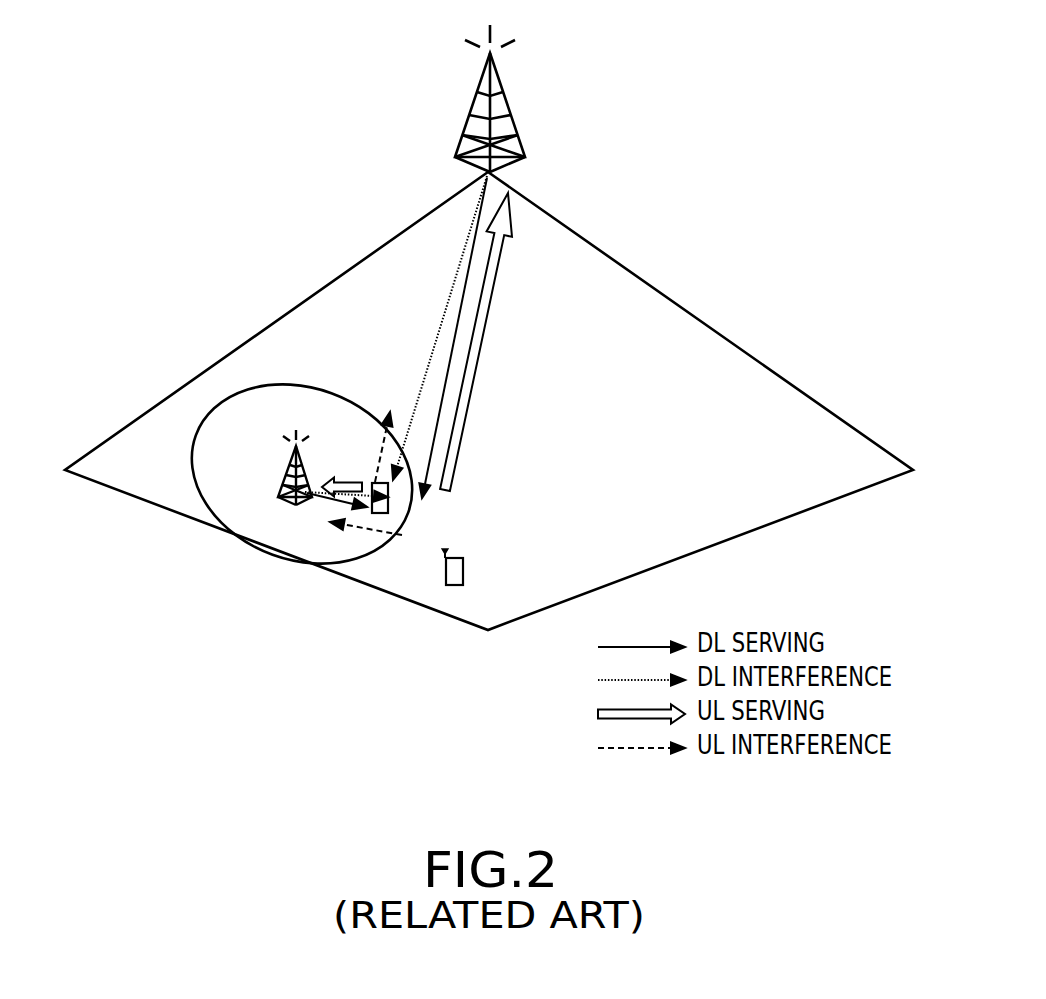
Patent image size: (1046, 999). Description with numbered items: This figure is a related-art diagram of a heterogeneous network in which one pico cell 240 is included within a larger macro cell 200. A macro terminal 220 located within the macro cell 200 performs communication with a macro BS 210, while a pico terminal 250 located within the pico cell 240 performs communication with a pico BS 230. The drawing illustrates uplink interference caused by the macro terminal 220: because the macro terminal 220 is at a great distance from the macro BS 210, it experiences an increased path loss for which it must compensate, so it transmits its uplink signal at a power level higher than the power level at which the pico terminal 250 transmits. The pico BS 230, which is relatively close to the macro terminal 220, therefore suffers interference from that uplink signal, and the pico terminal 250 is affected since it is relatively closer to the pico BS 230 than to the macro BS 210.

The macro cell 200 is at (307, 300).
The macro BS 210 is at (520, 140).
The macro terminal 220 is at (464, 572).
The pico BS 230 is at (286, 456).
The pico cell 240 is at (296, 387).
The pico terminal 250 is at (371, 483).